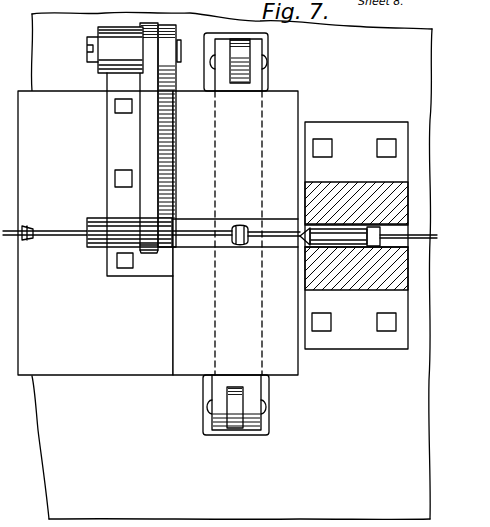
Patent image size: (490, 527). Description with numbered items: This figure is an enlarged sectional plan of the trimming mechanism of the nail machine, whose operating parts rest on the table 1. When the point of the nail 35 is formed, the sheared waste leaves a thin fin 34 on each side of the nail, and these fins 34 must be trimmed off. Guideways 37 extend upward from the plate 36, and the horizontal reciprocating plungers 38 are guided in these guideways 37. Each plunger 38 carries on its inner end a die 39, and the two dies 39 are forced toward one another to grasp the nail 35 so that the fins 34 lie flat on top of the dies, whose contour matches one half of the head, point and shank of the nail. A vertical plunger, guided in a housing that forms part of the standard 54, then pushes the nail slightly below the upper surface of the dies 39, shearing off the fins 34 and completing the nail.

The table 1 is at (231, 265).
The fin 34 is at (394, 216).
The nail 35 is at (193, 230).
The plate 36 is at (95, 233).
The guideway 37 is at (263, 160).
The reciprocating plunger 38 is at (252, 90).
The die 39 is at (231, 229).
The standard 54 is at (356, 235).